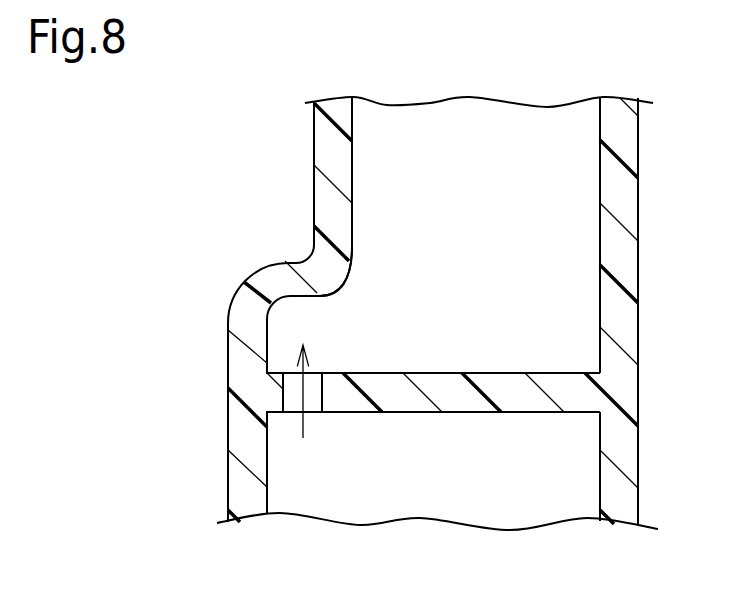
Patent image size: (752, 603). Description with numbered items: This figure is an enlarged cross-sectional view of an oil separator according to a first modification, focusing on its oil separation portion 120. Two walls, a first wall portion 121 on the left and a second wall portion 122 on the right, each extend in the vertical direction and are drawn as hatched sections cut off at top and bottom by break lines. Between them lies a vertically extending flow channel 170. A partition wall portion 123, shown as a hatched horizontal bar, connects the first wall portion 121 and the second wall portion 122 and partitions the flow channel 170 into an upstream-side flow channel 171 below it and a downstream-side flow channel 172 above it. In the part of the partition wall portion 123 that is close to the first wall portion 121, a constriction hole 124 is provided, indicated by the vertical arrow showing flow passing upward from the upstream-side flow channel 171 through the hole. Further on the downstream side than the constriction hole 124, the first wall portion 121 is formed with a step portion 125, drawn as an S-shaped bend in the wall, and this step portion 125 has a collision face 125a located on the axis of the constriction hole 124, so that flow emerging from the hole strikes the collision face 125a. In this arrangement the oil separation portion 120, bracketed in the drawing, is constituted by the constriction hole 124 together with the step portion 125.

The oil separation portion 120 is at (402, 296).
The first wall portion 121 is at (314, 140).
The second wall portion 122 is at (638, 150).
The partition wall portion 123 is at (458, 412).
The constriction hole 124 is at (320, 386).
The step portion 125 is at (319, 308).
The collision face 125a is at (315, 298).
The flow channel 170 is at (590, 287).
The upstream-side flow channel 171 is at (556, 506).
The downstream-side flow channel 172 is at (572, 112).